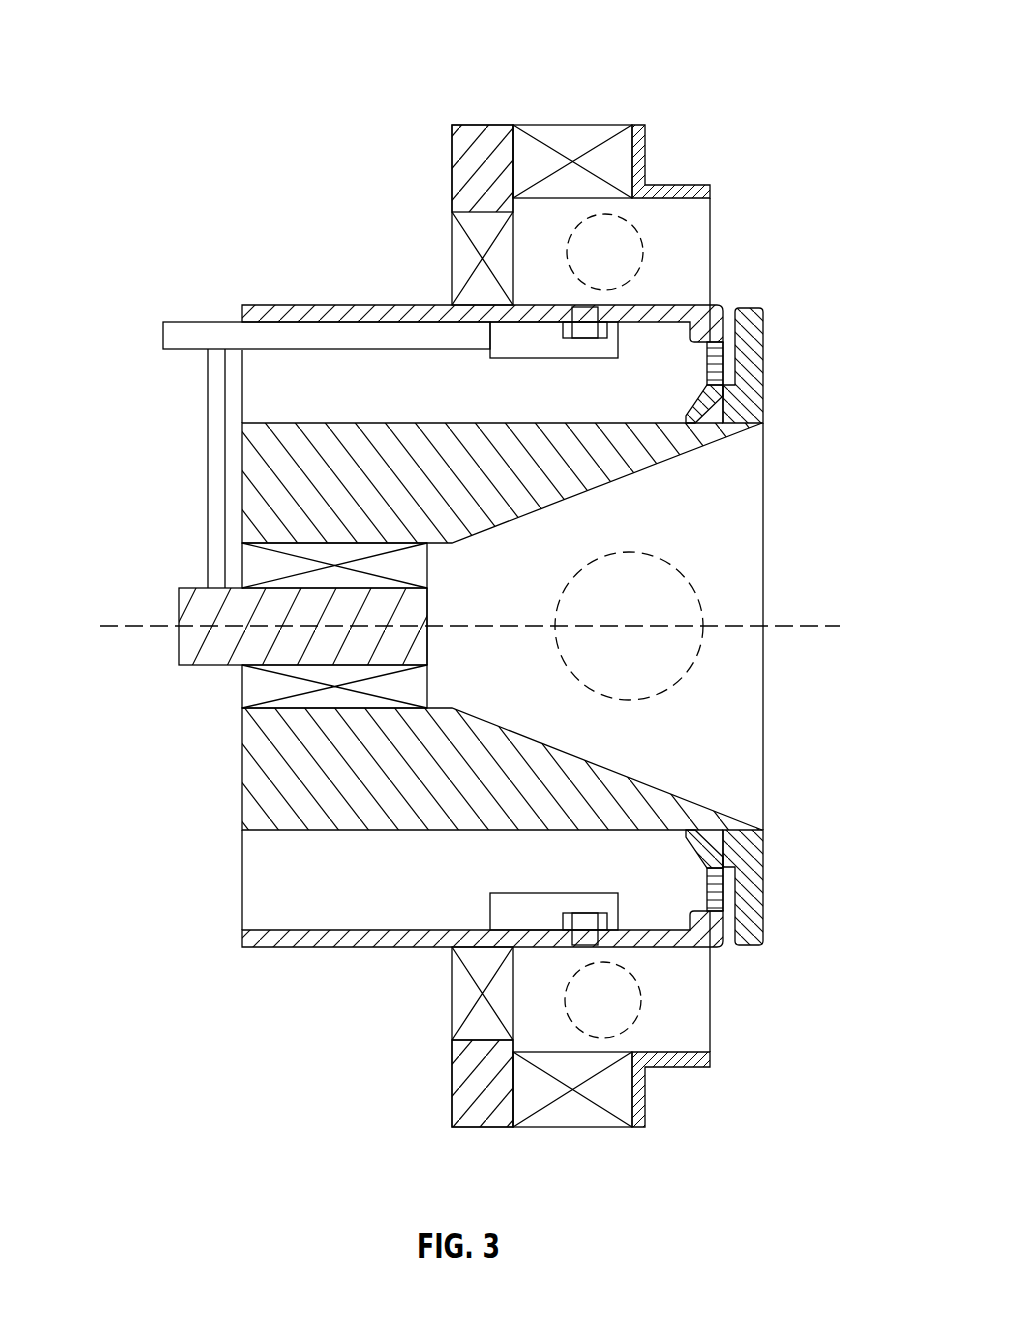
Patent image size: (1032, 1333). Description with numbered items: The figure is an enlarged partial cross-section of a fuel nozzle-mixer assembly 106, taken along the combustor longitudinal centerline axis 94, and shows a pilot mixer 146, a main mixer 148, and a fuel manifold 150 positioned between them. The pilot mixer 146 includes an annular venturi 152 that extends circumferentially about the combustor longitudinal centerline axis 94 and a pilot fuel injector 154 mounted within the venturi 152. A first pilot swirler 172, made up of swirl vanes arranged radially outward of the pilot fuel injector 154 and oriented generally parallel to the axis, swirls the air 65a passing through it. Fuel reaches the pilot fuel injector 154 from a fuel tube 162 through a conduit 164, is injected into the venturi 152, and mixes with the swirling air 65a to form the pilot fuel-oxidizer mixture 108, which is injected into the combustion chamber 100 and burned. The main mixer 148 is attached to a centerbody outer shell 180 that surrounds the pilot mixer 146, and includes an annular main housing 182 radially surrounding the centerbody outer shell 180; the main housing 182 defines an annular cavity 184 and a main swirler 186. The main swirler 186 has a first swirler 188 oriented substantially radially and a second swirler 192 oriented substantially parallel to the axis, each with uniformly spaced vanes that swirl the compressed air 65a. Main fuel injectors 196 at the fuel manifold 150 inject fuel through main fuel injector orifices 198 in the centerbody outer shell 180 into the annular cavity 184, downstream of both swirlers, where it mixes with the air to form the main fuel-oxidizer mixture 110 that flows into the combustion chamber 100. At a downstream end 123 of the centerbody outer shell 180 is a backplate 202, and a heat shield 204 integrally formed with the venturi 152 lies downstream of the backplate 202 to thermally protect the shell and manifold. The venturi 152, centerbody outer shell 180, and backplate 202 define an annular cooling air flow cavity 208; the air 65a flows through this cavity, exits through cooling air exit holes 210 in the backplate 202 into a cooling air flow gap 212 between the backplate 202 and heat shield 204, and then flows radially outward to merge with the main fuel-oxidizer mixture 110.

The fuel nozzle-mixer assembly 106 is at (138, 36).
The air 65a is at (603, 208).
The combustor longitudinal centerline axis 94 is at (745, 632).
The combustion chamber 100 is at (887, 642).
The pilot fuel-oxidizer mixture 108 is at (652, 556).
The main fuel-oxidizer mixture 110 is at (642, 245).
The downstream end 123 is at (653, 296).
The pilot mixer 146 is at (430, 640).
The main mixer 148 is at (450, 170).
The fuel manifold 150 is at (517, 348).
The venturi 152 is at (685, 450).
The pilot fuel injector 154 is at (192, 648).
The fuel tube 162 is at (212, 320).
The conduit 164 is at (210, 418).
The first pilot swirler 172 is at (248, 563).
The centerbody outer shell 180 is at (312, 948).
The main housing 182 is at (690, 184).
The annular cavity 184 is at (690, 999).
The main swirler 186 is at (563, 1130).
The first swirler 188 is at (598, 136).
The second swirler 192 is at (462, 266).
The main fuel injectors 196 is at (583, 342).
The main fuel injector orifices 198 is at (575, 298).
The backplate 202 is at (713, 317).
The heat shield 204 is at (763, 385).
The cooling air flow cavity 208 is at (683, 879).
The cooling air exit holes 210 is at (720, 350).
The cooling air flow gap 212 is at (730, 312).